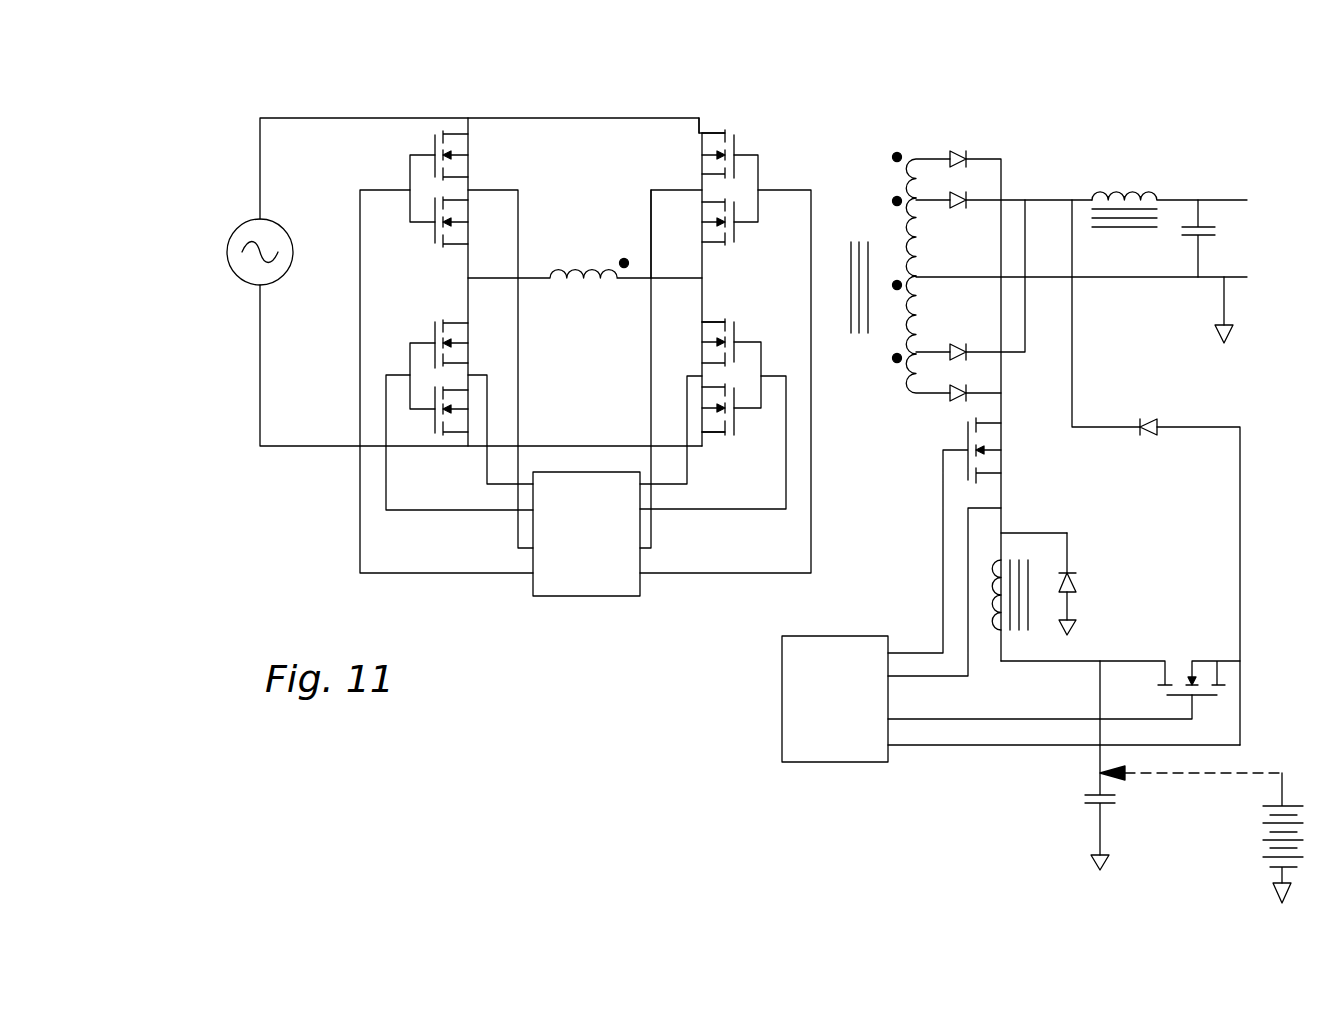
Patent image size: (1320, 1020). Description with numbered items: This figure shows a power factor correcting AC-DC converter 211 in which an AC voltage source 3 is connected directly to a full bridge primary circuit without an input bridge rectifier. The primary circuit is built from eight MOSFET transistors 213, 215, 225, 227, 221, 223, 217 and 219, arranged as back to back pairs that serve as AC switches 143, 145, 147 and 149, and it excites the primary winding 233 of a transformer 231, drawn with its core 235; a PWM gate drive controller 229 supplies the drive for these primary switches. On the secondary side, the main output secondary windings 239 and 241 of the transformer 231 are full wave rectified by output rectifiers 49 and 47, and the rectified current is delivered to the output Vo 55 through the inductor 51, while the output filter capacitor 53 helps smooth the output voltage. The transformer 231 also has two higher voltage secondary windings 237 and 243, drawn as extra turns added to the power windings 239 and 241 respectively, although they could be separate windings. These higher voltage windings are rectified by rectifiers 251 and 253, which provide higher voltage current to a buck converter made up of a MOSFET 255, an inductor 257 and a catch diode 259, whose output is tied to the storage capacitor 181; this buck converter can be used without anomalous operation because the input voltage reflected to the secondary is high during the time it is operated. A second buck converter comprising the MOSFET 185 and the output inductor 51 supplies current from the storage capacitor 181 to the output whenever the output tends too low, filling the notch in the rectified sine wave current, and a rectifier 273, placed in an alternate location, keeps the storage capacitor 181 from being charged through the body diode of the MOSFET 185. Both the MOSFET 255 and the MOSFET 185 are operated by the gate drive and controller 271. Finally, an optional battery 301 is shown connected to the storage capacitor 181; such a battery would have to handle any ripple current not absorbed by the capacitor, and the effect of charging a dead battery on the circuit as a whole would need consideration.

The voltage source 3 is at (228, 245).
The PFC AC-DC converter 211 is at (235, 120).
The MOSFET transistor 213 is at (393, 145).
The MOSFET transistor 215 is at (420, 234).
The MOSFET transistor 225 is at (418, 350).
The MOSFET transistor 227 is at (448, 443).
The MOSFET transistor 221 is at (742, 140).
The MOSFET transistor 223 is at (730, 252).
The MOSFET transistor 217 is at (718, 310).
The MOSFET transistor 219 is at (745, 420).
The primary winding 233 is at (558, 250).
The back to back MOSFET switch 145 is at (690, 212).
The back to back MOSFET switch 143 is at (685, 160).
The back to back MOSFET switch 147 is at (697, 340).
The back to back MOSFET switch 149 is at (690, 415).
The PWM gate controller G 229 is at (598, 608).
The transformer 231 is at (1022, 249).
The transformer core 235 is at (856, 215).
The higher voltage secondary winding 237 is at (890, 172).
The main output secondary winding 239 is at (917, 237).
The main output secondary winding 241 is at (925, 332).
The higher voltage secondary winding 243 is at (898, 376).
The rectifier 251 is at (946, 150).
The output rectifier 49 is at (968, 190).
The output rectifier 47 is at (968, 340).
The rectifier 253 is at (968, 378).
The inductor 51 is at (1102, 188).
The output filter capacitor 53 is at (1180, 245).
The output Vo 55 is at (1298, 218).
The rectifier 273 is at (1146, 410).
The MOSFET 255 is at (1025, 425).
The inductor 257 is at (1017, 548).
The catch diode 259 is at (1085, 598).
The gate drive and controller G2 271 is at (775, 688).
The MOSFET switch 185 is at (1185, 655).
The energy storage capacitor 181 is at (1082, 792).
The battery 301 is at (1255, 820).